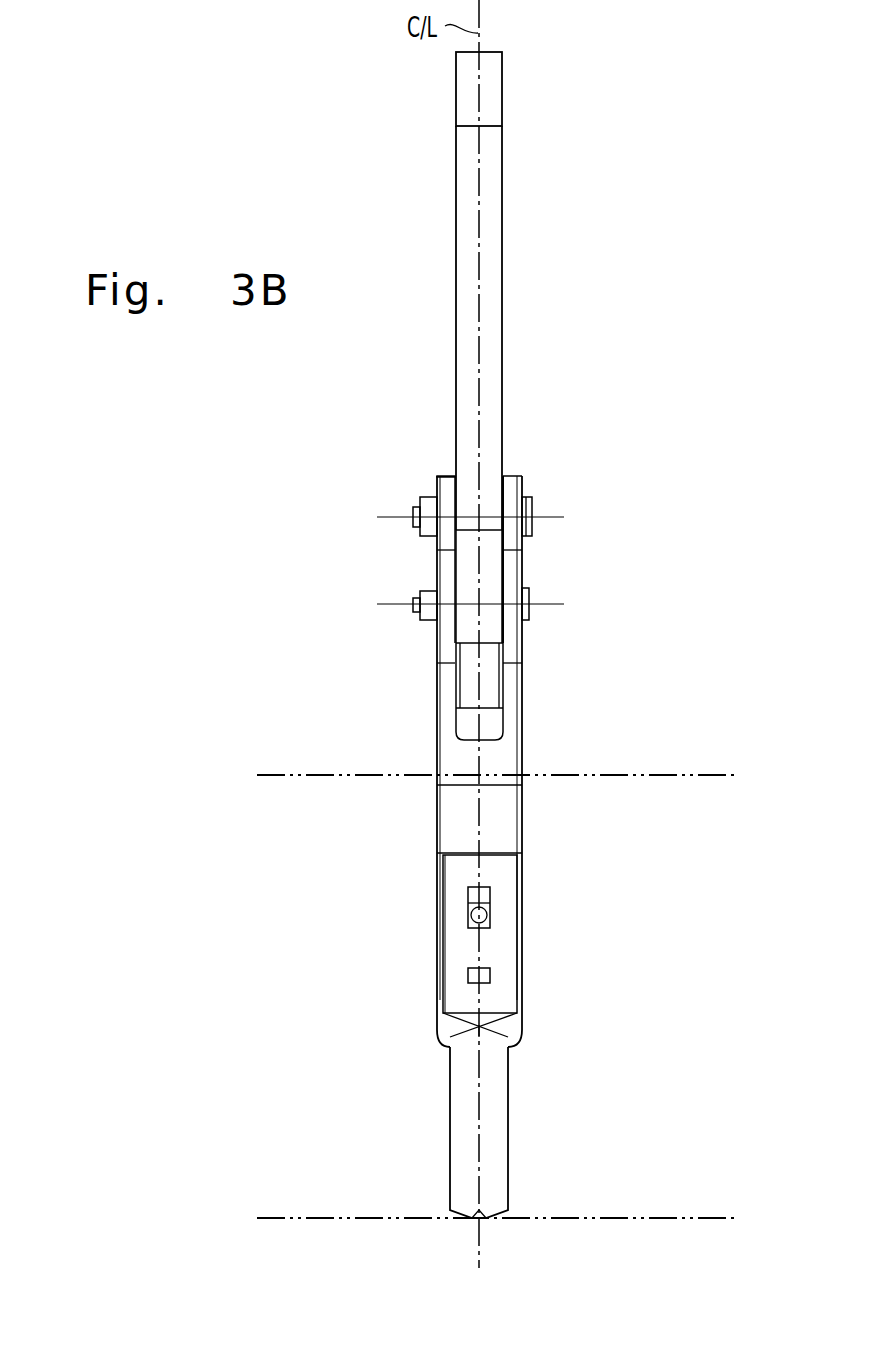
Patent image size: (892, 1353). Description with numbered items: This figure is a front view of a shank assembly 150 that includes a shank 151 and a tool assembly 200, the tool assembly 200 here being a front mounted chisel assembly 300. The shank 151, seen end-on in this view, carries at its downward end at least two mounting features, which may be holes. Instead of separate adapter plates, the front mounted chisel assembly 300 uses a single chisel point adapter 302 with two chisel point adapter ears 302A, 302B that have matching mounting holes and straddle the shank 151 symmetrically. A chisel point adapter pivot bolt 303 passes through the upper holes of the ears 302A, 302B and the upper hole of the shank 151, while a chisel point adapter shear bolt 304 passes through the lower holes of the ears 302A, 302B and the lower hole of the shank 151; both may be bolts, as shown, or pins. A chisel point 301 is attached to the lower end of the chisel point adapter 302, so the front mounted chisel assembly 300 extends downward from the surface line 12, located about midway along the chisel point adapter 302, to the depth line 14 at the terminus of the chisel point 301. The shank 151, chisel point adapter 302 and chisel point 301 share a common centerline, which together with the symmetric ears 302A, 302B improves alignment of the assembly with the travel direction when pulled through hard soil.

The surface line 12 is at (682, 775).
The second reference plane 14 is at (682, 1218).
The shank assembly 150 is at (502, 190).
The shank 151 is at (502, 83).
The tool assembly 200 is at (522, 700).
The front mounted chisel assembly 300 is at (522, 918).
The chisel point 301 is at (508, 1180).
The chisel point adapter 302 is at (466, 729).
The chisel point adapter ear 302A is at (445, 475).
The chisel point adapter ear 302B is at (513, 475).
The chisel point adapter pivot bolt 303 is at (532, 512).
The chisel point adapter shear bolt 304 is at (529, 598).